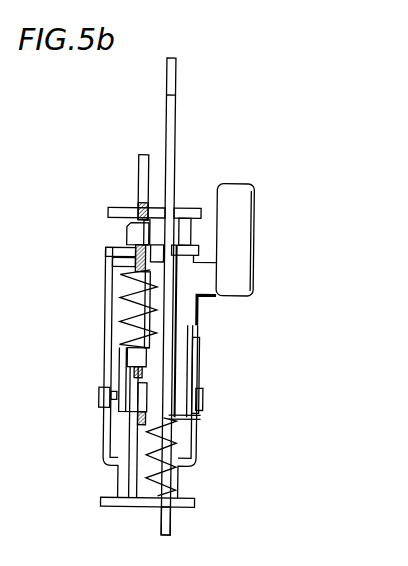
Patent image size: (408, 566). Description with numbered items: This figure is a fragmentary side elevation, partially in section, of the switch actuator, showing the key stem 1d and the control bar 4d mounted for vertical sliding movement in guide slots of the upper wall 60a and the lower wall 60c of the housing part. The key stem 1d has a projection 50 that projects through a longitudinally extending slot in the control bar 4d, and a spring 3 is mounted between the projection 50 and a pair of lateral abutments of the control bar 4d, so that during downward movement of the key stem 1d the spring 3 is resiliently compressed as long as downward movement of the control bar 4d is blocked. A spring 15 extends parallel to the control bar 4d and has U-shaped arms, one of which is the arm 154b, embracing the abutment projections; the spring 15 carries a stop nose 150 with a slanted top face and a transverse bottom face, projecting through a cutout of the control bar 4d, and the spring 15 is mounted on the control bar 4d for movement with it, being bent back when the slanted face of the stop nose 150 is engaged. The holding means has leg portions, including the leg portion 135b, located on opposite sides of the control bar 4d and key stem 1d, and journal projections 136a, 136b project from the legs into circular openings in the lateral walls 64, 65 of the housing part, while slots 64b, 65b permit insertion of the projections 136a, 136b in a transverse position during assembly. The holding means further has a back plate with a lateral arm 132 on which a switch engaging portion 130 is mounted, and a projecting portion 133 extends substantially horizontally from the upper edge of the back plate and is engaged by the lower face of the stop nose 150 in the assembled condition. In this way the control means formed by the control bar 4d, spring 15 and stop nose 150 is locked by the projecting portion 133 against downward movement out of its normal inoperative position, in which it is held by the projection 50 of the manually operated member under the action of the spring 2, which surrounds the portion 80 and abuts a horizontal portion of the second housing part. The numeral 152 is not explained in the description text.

The key stem 1d is at (170, 128).
The stop nose 150 is at (133, 232).
The upper wall 60a is at (190, 210).
The switch engaging portion 130 is at (236, 203).
The lateral arm 132 is at (200, 298).
The control bar 4d is at (140, 453).
The projecting portion 133 is at (111, 248).
The projection 50 is at (121, 266).
The spring 3 is at (125, 297).
The U-shaped arm 154b is at (133, 350).
The lateral wall 64 is at (106, 354).
The slot 64b is at (110, 392).
The journal projection 136a is at (100, 393).
The slider 152 is at (137, 412).
The spring 15 is at (193, 325).
The leg portion 135b is at (200, 335).
The lateral wall 65 is at (200, 362).
The journal projection 136b is at (204, 393).
The slot 65b is at (202, 412).
The spring 2 is at (175, 437).
The lower wall 60c is at (197, 500).
The portion 80 is at (165, 518).